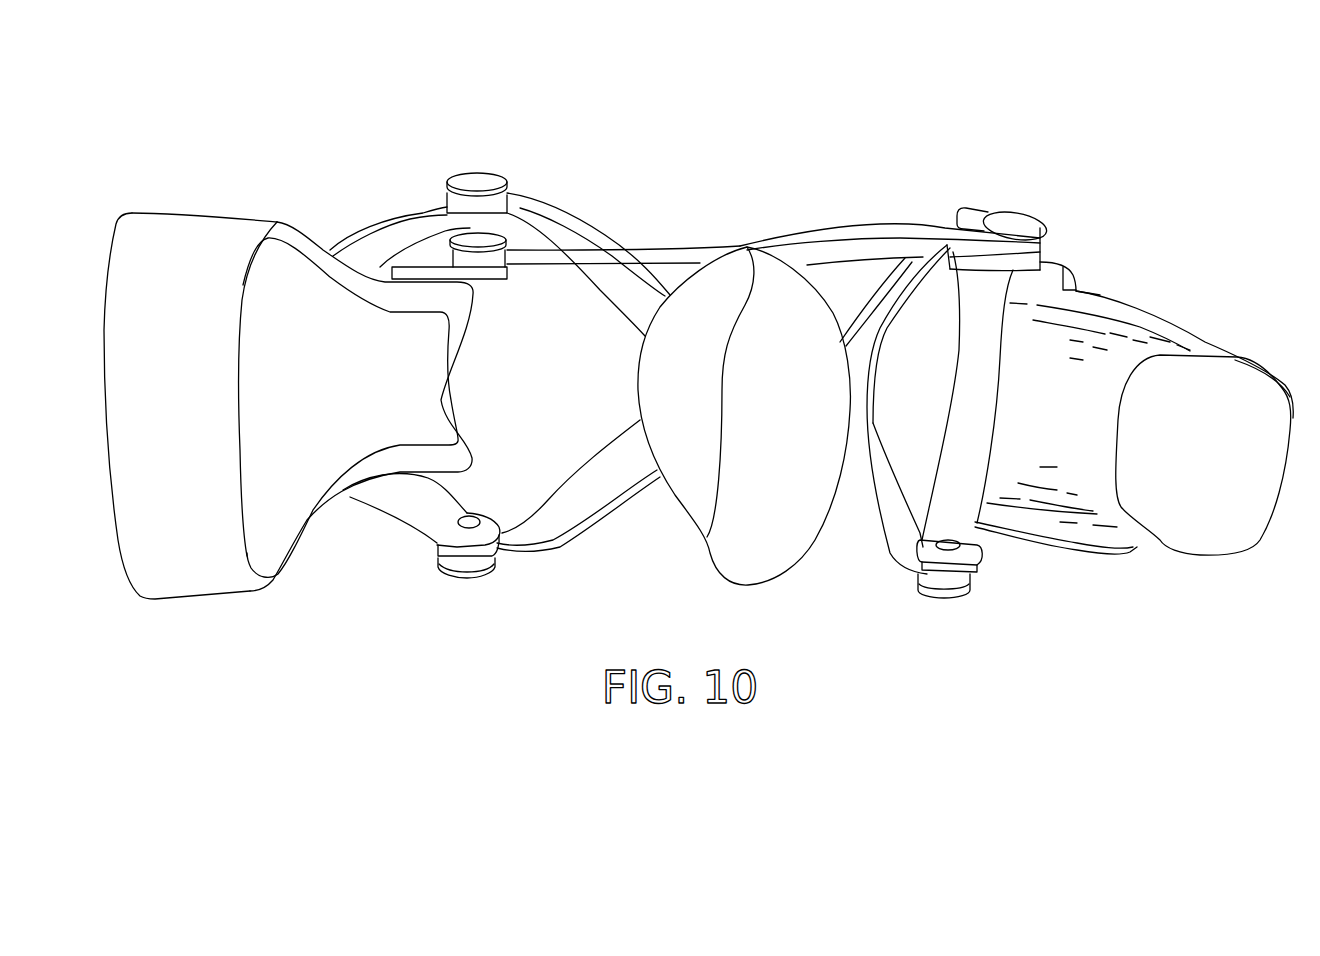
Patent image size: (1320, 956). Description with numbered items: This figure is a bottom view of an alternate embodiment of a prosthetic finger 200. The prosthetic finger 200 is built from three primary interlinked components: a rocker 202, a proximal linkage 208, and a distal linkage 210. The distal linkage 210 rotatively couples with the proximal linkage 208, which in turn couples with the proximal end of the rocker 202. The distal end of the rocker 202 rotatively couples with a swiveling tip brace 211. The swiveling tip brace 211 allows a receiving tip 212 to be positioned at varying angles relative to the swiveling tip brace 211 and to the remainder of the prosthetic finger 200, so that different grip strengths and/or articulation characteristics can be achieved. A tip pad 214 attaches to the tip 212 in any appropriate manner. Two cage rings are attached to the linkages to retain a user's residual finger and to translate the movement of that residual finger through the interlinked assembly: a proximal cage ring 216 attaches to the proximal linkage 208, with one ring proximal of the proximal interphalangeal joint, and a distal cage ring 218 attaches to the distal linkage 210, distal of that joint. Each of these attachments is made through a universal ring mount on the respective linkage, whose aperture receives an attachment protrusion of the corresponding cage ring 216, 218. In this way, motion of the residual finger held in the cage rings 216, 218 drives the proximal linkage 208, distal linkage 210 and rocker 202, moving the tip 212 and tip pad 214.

The prosthetic finger 200 is at (434, 110).
The rocker 202 is at (864, 252).
The proximal linkage 208 is at (370, 250).
The distal linkage 210 is at (598, 265).
The swiveling tip brace 211 is at (852, 580).
The receiving tip 212 is at (1020, 470).
The tip pad 214 is at (1240, 510).
The proximal cage ring 216 is at (170, 237).
The distal cage ring 218 is at (783, 333).